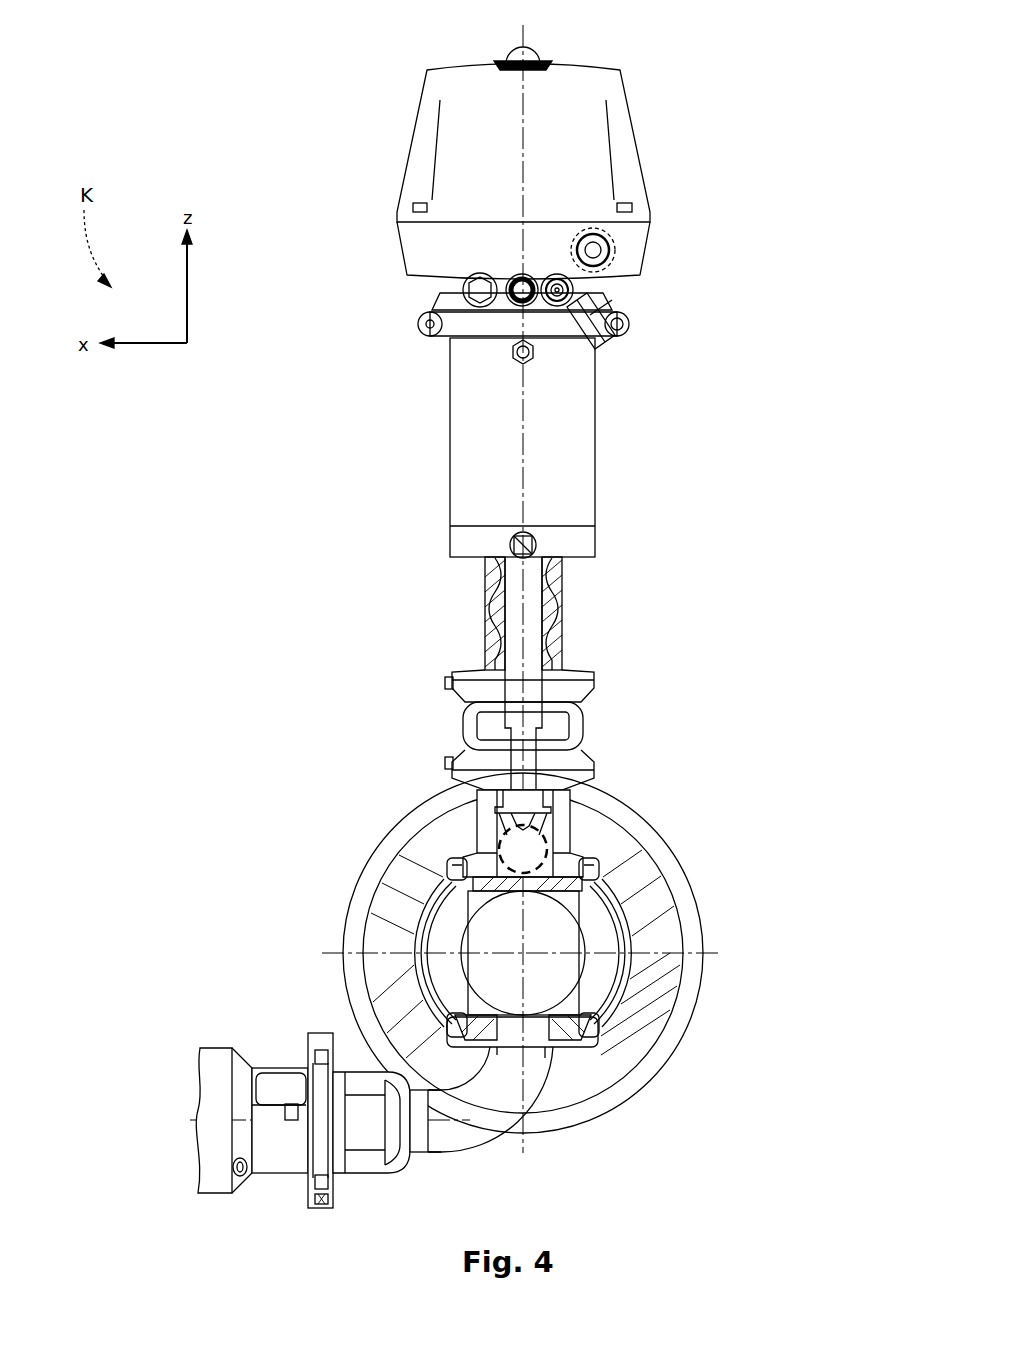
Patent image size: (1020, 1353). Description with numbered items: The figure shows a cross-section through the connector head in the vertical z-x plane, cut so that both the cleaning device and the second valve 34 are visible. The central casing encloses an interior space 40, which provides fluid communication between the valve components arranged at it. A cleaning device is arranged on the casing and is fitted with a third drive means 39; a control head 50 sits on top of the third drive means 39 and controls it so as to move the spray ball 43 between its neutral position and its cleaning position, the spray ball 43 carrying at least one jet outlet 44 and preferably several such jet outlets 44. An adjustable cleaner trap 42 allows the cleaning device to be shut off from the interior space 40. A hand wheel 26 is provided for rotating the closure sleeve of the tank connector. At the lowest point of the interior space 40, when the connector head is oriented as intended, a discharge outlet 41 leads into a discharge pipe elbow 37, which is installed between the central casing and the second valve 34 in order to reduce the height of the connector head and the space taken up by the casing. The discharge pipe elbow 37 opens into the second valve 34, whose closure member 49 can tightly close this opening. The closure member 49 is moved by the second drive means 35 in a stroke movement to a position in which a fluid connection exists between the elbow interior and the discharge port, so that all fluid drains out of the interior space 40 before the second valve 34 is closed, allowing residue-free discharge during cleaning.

The control head 50 is at (629, 163).
The third drive means 39 is at (578, 485).
The hand wheel 26 is at (650, 833).
The spray ball 43 is at (550, 842).
The jet outlet 44 is at (548, 858).
The cleaner trap 42 is at (555, 886).
The interior space 40 is at (573, 998).
The discharge outlet 41 is at (594, 1030).
The discharge pipe elbow 37 is at (545, 1095).
The second drive means 35 is at (213, 1057).
The second valve 34 is at (352, 1070).
The closure member 49 is at (393, 1133).